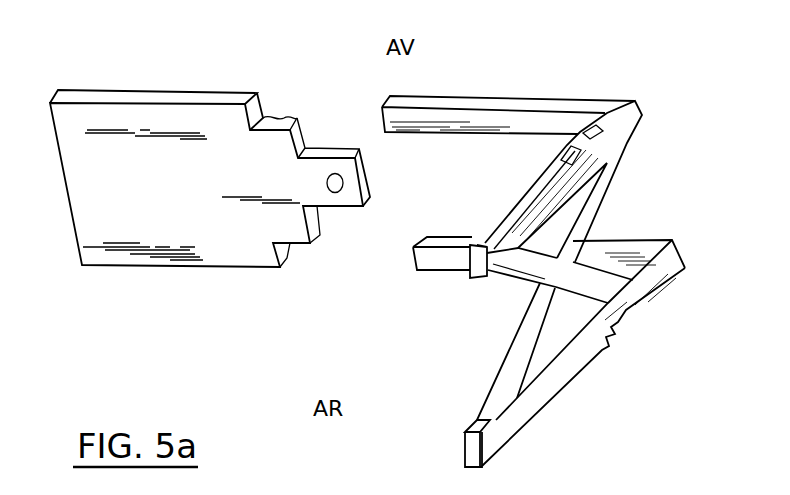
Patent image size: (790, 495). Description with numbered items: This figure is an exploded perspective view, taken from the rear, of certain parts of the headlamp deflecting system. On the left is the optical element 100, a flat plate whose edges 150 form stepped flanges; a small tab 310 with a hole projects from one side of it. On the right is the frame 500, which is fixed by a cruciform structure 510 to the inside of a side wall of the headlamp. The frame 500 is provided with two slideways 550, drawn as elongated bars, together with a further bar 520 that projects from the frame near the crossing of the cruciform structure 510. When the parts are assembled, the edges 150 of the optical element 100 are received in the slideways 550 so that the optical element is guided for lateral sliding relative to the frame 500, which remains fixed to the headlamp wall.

The plate 100 is at (210, 178).
The edges of the optical element 150 is at (152, 99).
The mounting tab with hole 310 is at (313, 177).
The frame 500 is at (648, 198).
The cruciform structure 510 is at (578, 348).
The rear bar 520 is at (452, 262).
The slideways 550 is at (484, 118).